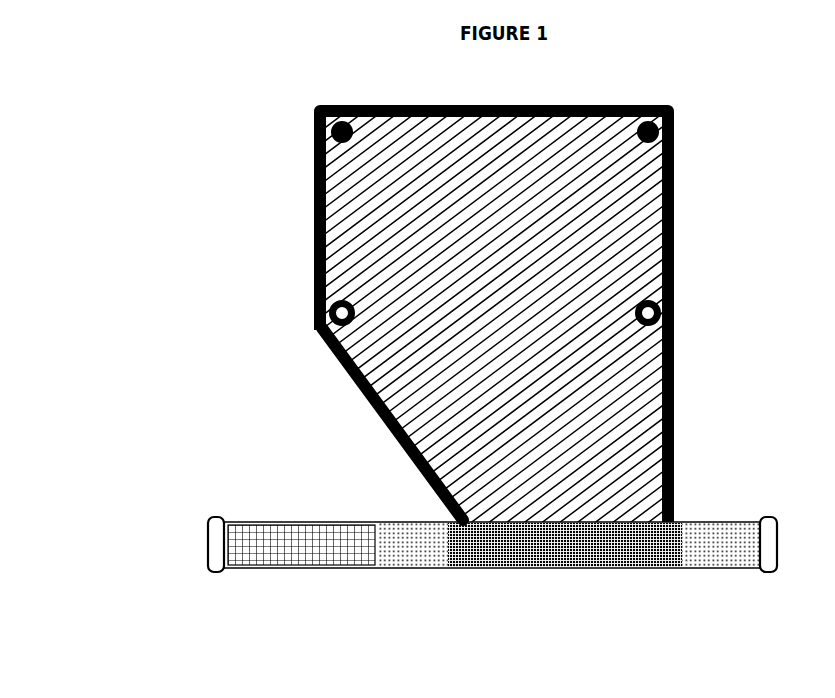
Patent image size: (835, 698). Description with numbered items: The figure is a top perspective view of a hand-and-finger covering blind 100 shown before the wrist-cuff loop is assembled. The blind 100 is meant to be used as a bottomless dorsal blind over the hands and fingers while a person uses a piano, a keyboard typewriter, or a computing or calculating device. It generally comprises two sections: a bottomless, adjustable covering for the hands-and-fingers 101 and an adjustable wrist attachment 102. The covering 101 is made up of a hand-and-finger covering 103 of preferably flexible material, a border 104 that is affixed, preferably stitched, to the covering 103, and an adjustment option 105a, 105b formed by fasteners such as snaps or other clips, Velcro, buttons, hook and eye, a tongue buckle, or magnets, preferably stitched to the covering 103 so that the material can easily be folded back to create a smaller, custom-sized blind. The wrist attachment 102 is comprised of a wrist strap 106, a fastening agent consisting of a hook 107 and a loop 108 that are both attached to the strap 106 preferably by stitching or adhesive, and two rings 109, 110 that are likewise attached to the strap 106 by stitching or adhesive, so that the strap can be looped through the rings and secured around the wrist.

The hand-and-finger covering blind 100 is at (110, 105).
The bottomless adjustable covering for the hands-and-fingers 101 is at (243, 105).
The adjustable wrist attachment 102 is at (203, 489).
The hand-and-finger covering 103 is at (595, 262).
The border 104 is at (692, 259).
The adjustment option 105a is at (345, 89).
The adjustment option 105b is at (692, 313).
The wrist strap 106 is at (415, 590).
The hook 107 is at (292, 590).
The loop 108 is at (575, 590).
The ring 109 is at (217, 590).
The ring 110 is at (768, 590).